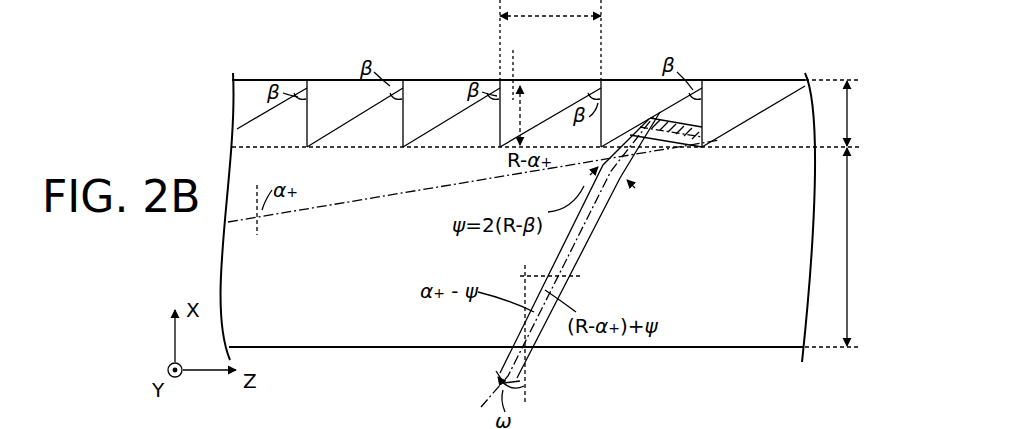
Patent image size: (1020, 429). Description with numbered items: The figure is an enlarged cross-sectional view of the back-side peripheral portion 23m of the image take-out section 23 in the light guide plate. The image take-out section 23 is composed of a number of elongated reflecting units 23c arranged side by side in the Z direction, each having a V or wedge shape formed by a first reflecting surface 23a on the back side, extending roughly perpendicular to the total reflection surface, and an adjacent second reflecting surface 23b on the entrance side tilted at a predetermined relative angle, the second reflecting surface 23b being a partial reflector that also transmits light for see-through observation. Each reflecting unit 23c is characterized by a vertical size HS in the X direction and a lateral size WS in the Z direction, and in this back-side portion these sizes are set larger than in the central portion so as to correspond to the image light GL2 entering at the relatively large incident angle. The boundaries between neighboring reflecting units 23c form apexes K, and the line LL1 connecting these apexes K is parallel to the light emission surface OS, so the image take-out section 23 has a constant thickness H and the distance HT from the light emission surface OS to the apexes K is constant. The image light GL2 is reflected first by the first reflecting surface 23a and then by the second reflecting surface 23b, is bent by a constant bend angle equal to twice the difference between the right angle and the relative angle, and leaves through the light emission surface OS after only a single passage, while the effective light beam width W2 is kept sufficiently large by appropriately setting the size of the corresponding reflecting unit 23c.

The image take-out section 23 is at (465, 54).
The first reflecting surface 23a is at (254, 125).
The second reflecting surface 23b is at (240, 140).
The reflecting unit 23c is at (256, 94).
The peripheral portion 23m is at (690, 220).
The pitch point P is at (307, 80).
The apex K is at (307, 150).
The lateral size WS is at (550, 8).
The vertical size HS is at (517, 90).
The thickness H is at (835, 113).
The distance HT is at (842, 247).
The line LL1 is at (755, 150).
The image light GL2 is at (348, 205).
The light emission surface OS is at (405, 348).
The effective light beam width W2 is at (623, 182).